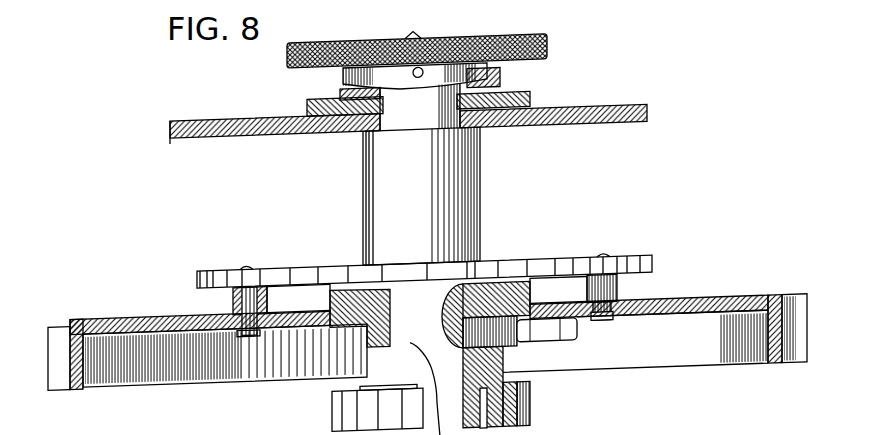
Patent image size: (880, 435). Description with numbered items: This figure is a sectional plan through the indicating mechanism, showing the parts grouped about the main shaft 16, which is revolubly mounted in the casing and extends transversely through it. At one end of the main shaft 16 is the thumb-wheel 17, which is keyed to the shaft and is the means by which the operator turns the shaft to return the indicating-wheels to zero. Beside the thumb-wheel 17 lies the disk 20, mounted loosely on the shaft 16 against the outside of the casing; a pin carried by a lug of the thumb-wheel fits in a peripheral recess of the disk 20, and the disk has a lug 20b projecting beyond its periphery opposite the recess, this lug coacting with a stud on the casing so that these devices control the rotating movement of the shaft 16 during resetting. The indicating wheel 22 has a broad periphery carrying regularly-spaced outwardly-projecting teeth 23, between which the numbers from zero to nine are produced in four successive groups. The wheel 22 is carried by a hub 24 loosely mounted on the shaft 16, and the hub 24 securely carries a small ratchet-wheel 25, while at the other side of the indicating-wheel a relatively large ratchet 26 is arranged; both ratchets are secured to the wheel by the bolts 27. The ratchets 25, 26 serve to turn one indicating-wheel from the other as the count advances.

The thumb-wheel 17 is at (548, 44).
The disk 20 is at (530, 94).
The main shaft 16 is at (405, 110).
The ratchet 26 is at (545, 263).
The bolts 27 is at (233, 302).
The indicating wheels 22 is at (415, 343).
The teeth 23 is at (793, 297).
The hub 24 is at (386, 388).
The ratchet-wheel 25 is at (510, 408).
The lug 20b is at (531, 420).